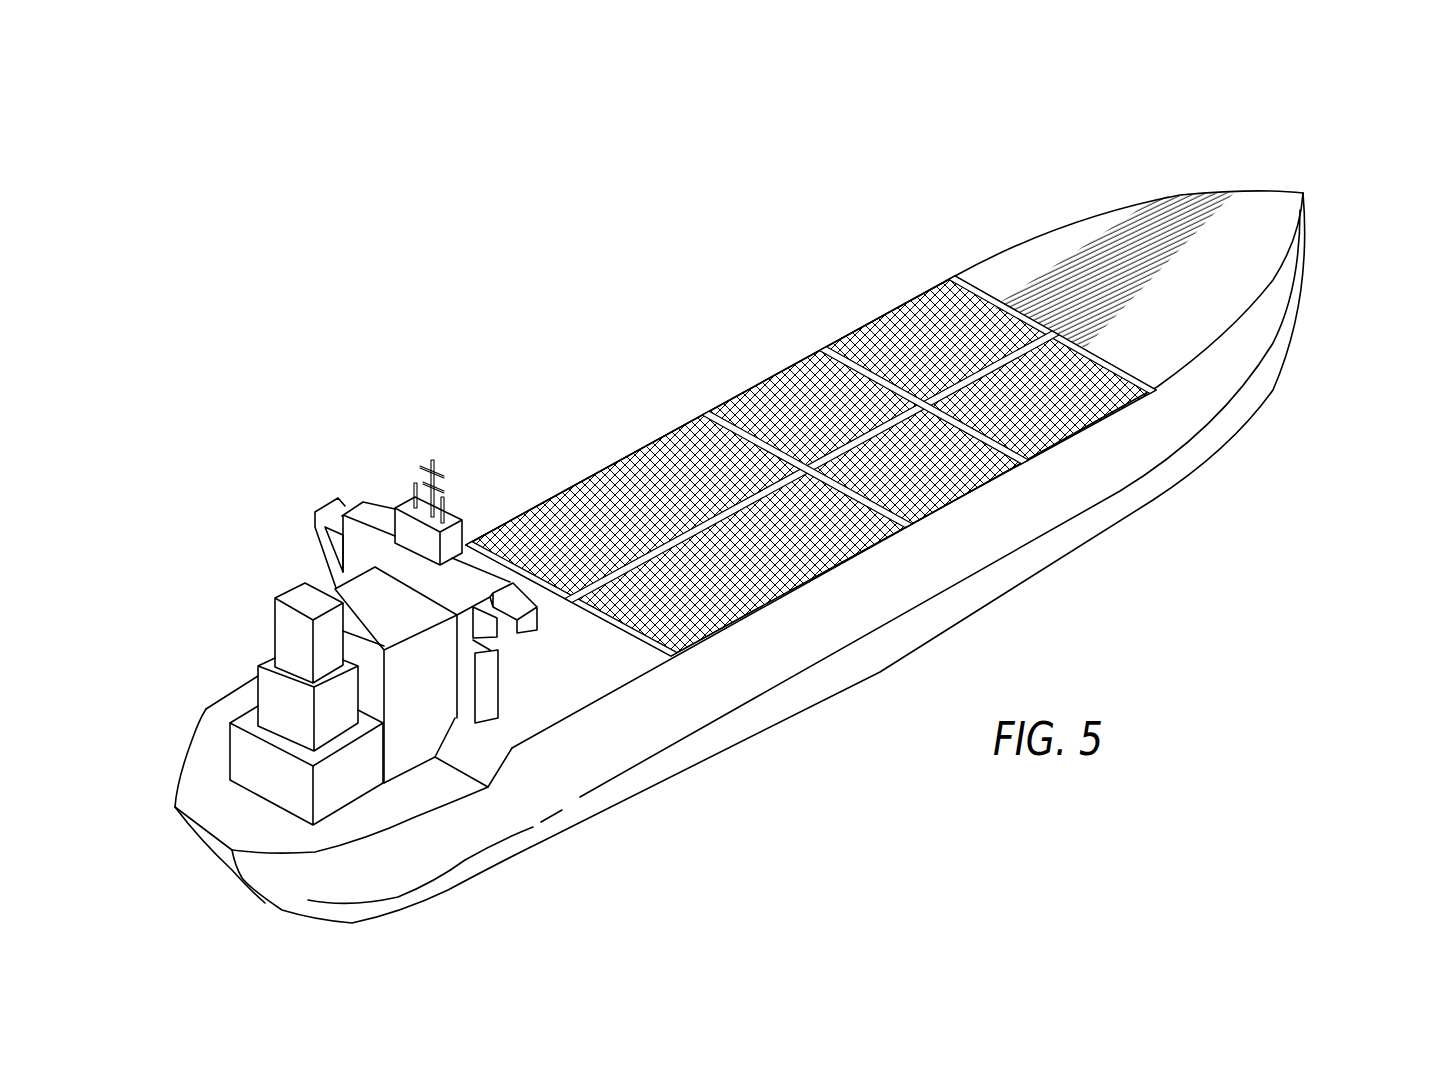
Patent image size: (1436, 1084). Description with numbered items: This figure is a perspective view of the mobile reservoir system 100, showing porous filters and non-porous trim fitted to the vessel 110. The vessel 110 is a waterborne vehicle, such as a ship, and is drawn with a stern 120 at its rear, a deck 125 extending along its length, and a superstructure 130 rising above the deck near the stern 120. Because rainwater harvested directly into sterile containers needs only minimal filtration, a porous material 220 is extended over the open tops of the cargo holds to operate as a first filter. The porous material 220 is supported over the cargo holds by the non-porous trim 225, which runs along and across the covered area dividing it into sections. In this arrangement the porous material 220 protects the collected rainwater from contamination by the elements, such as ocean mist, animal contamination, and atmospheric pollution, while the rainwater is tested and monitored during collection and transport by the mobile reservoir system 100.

The mobile reservoir system 100 is at (1322, 168).
The vessel 110 is at (1230, 398).
The stern 120 is at (240, 594).
The deck 125 is at (1102, 247).
The superstructure 130 is at (402, 500).
The porous material 220 is at (783, 396).
The non-porous trim 225 is at (717, 420).